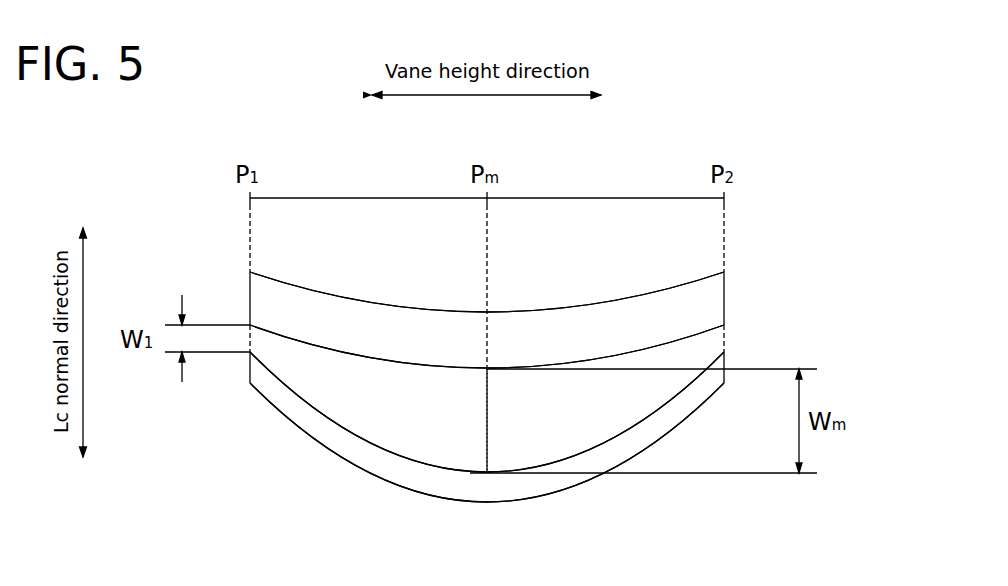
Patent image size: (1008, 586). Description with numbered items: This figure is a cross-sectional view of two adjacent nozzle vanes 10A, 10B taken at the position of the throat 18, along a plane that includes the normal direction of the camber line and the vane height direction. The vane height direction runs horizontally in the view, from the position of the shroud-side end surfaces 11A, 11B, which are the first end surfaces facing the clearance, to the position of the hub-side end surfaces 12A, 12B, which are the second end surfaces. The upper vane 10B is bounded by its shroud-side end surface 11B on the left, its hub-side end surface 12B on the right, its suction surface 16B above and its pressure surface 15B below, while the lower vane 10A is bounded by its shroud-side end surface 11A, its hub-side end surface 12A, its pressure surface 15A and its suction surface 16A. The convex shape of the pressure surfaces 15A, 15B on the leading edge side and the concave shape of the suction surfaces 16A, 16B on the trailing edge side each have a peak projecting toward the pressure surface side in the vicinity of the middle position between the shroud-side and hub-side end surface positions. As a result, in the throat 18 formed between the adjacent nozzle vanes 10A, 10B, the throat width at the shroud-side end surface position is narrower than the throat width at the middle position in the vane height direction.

The nozzle vane 10A is at (570, 487).
The nozzle vane 10B is at (572, 325).
The shroud-side end surface 11A is at (249, 370).
The shroud-side end surface 11B is at (249, 300).
The hub-side end surface 12A is at (726, 366).
The hub-side end surface 12B is at (726, 286).
The pressure surface 15A is at (398, 487).
The pressure surface 15B is at (368, 362).
The suction surface 16A is at (450, 470).
The suction surface 16B is at (400, 310).
The throat 18 is at (575, 425).